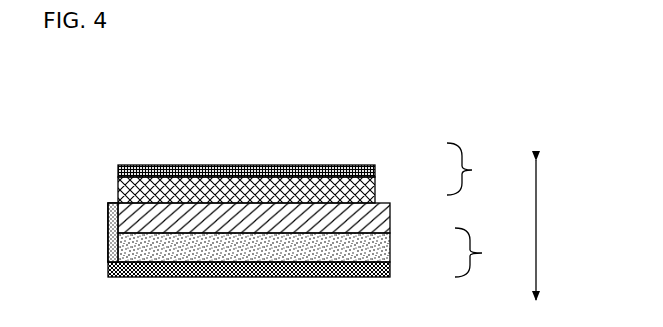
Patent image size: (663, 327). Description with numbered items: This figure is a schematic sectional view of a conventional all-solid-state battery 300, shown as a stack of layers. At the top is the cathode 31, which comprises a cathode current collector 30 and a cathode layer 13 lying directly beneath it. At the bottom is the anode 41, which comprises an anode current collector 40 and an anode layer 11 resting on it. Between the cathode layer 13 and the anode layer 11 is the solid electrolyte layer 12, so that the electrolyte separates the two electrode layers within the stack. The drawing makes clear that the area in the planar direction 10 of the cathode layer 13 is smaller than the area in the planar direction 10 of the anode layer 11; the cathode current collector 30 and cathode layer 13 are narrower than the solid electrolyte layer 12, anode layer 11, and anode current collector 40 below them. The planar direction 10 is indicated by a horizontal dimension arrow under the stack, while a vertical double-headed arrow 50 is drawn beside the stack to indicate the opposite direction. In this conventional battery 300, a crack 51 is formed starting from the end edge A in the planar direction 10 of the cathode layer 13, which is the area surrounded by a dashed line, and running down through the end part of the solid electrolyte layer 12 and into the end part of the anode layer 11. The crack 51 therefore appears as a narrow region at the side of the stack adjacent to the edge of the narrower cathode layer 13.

The conventional all-solid-state battery 300 is at (123, 114).
The cathode current collector 30 is at (375, 166).
The cathode layer 13 is at (375, 183).
The solid electrolyte layer 12 is at (391, 208).
The anode layer 11 is at (391, 237).
The anode current collector 40 is at (391, 263).
The crack 51 is at (114, 232).
The end edge A is at (118, 194).
The planar direction 10 is at (110, 289).
The cathode 31 is at (473, 169).
The anode 41 is at (482, 252).
The thickness direction 50 is at (536, 215).